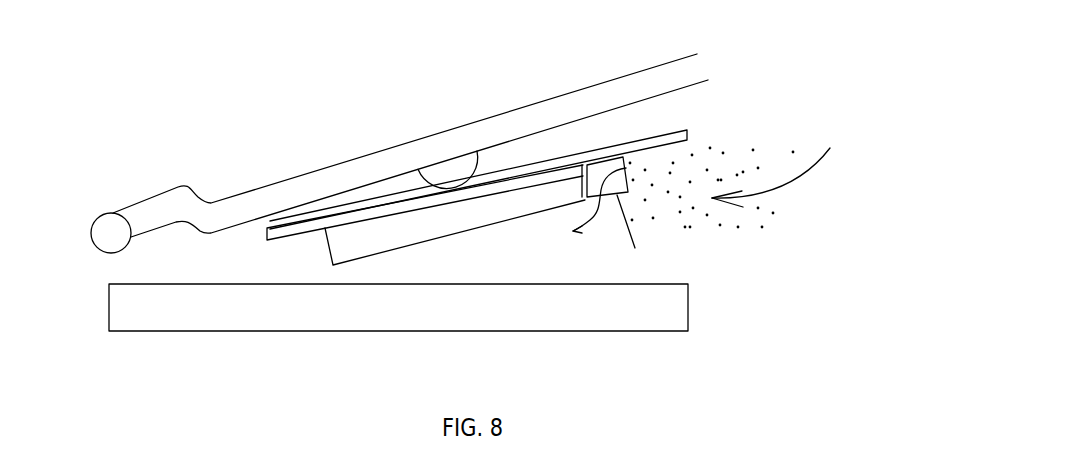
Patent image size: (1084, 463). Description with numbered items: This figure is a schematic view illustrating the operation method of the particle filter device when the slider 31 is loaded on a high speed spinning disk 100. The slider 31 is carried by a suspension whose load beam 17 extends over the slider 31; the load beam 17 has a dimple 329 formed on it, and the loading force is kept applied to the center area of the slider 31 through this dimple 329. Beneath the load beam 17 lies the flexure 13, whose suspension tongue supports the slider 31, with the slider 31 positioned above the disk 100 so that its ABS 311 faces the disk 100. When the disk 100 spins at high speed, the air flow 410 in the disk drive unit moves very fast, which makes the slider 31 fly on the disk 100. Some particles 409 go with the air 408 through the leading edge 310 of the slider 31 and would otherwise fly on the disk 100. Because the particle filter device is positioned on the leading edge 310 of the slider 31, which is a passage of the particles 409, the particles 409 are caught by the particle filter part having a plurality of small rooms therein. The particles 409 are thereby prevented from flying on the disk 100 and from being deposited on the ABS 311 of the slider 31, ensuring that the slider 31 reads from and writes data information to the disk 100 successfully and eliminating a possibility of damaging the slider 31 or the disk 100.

The load beam 17 is at (415, 158).
The dimple 329 is at (448, 177).
The flexure 13 is at (680, 130).
The slider 31 is at (347, 231).
The ABS 311 is at (393, 249).
The leading edge 310 is at (588, 168).
The air 408 is at (580, 210).
The particles 409 is at (698, 210).
The air flow 410 is at (787, 167).
The disk 100 is at (573, 310).